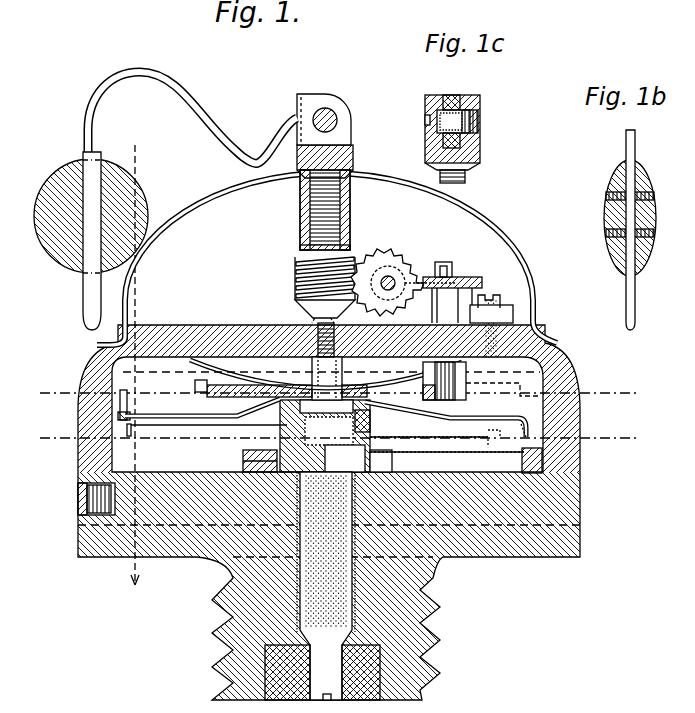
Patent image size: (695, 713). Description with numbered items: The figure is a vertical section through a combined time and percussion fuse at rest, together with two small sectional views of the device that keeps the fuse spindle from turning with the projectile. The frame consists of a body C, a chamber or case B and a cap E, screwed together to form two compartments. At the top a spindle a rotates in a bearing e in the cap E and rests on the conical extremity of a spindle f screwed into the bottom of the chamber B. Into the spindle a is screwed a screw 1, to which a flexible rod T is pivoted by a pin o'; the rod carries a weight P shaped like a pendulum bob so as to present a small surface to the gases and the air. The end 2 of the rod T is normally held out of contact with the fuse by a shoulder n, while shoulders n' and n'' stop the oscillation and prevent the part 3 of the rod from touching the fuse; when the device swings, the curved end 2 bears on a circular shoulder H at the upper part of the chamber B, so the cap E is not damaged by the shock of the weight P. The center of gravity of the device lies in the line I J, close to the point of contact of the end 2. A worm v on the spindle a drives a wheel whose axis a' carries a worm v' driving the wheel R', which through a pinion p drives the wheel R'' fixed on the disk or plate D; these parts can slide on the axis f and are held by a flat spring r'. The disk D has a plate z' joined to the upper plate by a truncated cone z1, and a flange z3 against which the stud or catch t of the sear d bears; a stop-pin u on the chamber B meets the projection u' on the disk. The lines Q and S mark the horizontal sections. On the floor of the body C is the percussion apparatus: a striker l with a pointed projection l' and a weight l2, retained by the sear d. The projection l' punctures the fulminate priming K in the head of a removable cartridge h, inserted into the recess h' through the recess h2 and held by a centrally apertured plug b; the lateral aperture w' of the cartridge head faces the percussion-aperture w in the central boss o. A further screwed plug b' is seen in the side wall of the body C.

In FIG. 1, the chamber or case B is at (218, 323).
In FIG. 1, the body C is at (329, 457).
In FIG. 1, the cap E is at (327, 259).
In FIG. 1, the circular shoulder H is at (95, 332).
In FIG. 1c, the flexible rod T is at (455, 95).
In FIG. 1b, the flexible rod T is at (626, 150).
In FIG. 1, the weight P is at (91, 216).
In FIG. 1b, the weight P is at (612, 183).
In FIG. 1, the part of the rod 3 is at (147, 78).
In FIG. 1, the end of the rod 2 is at (94, 316).
In FIG. 1b, the end of the rod 2 is at (644, 324).
In FIG. 1, the shoulder n'' is at (324, 108).
In FIG. 1, the pin o' is at (344, 112).
In FIG. 1c, the pin o' is at (474, 121).
In FIG. 1, the shoulder n' is at (336, 158).
In FIG. 1, the shoulder n is at (290, 171).
In FIG. 1, the spindle a is at (310, 210).
In FIG. 1, the screw 1 is at (300, 209).
In FIG. 1c, the screw 1 is at (440, 175).
In FIG. 1, the bearing e is at (372, 165).
In FIG. 1, the worm v is at (313, 287).
In FIG. 1, the worm v' is at (428, 255).
In FIG. 1, the axis a' is at (413, 287).
In FIG. 1, the wheel R' is at (468, 289).
In FIG. 1, the wheel R'' is at (281, 397).
In FIG. 1, the spindle f is at (325, 388).
In FIG. 1, the flat spring r' is at (331, 372).
In FIG. 1, the pinion p is at (481, 350).
In FIG. 1, the section line Q R Q is at (340, 383).
In FIG. 1, the section line S T S is at (340, 428).
In FIG. 1, the line I J I is at (141, 363).
In FIG. 1, the line I J is at (139, 587).
In FIG. 1, the stop-pin u is at (128, 400).
In FIG. 1, the projection u' is at (134, 407).
In FIG. 1, the disk or plate D is at (202, 407).
In FIG. 1, the plate z' is at (328, 427).
In FIG. 1, the truncated cone z1 is at (408, 405).
In FIG. 1, the flange z3 is at (352, 429).
In FIG. 1, the striker l is at (249, 461).
In FIG. 1, the weight l2 is at (229, 447).
In FIG. 1, the pointed projection l' is at (443, 464).
In FIG. 1, the stud or catch t is at (455, 447).
In FIG. 1, the sear d is at (532, 451).
In FIG. 1, the central boss o is at (369, 418).
In FIG. 1, the fulminate priming K is at (345, 458).
In FIG. 1, the percussion-aperture w is at (381, 461).
In FIG. 1, the lateral aperture w' is at (383, 481).
In FIG. 1, the removable cartridge h is at (326, 586).
In FIG. 1, the recess h' is at (340, 552).
In FIG. 1, the recess h2 is at (401, 673).
In FIG. 1, the plug b is at (322, 672).
In FIG. 1, the side plug b' is at (82, 498).